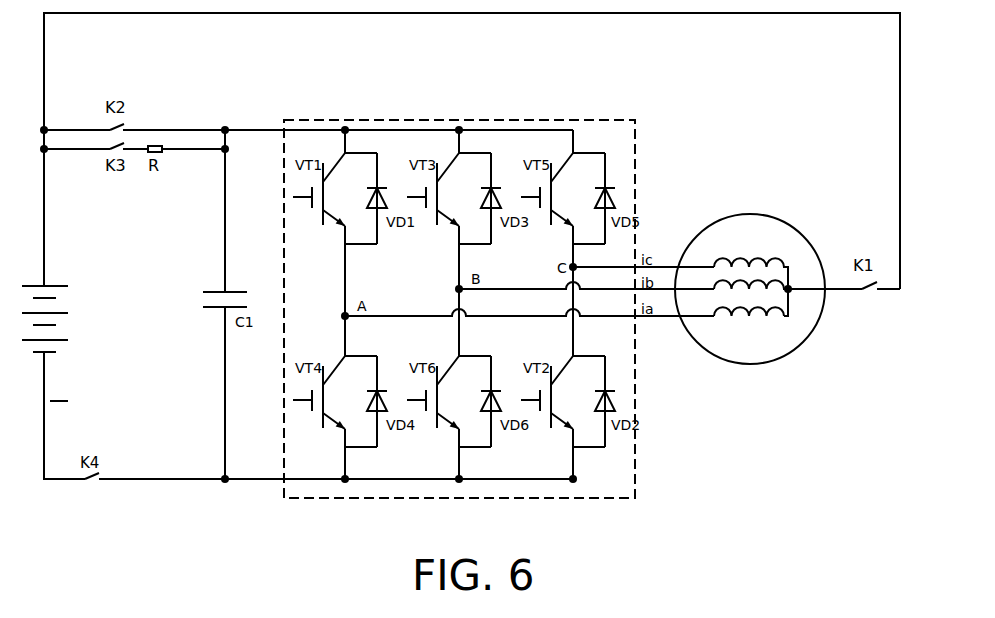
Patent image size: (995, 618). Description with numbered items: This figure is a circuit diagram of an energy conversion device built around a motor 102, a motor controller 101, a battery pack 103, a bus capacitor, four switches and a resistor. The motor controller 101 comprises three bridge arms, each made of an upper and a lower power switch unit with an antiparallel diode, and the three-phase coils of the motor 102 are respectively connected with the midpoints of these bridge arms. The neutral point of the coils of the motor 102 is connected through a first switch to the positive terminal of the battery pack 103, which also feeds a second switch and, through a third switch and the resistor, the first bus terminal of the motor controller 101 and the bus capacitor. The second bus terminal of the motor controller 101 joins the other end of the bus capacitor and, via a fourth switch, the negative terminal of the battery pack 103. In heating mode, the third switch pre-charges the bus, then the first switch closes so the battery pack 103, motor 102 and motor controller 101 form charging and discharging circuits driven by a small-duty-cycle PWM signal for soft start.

The motor controller 101 is at (460, 120).
The motor 102 is at (777, 222).
The battery pack 103 is at (50, 284).